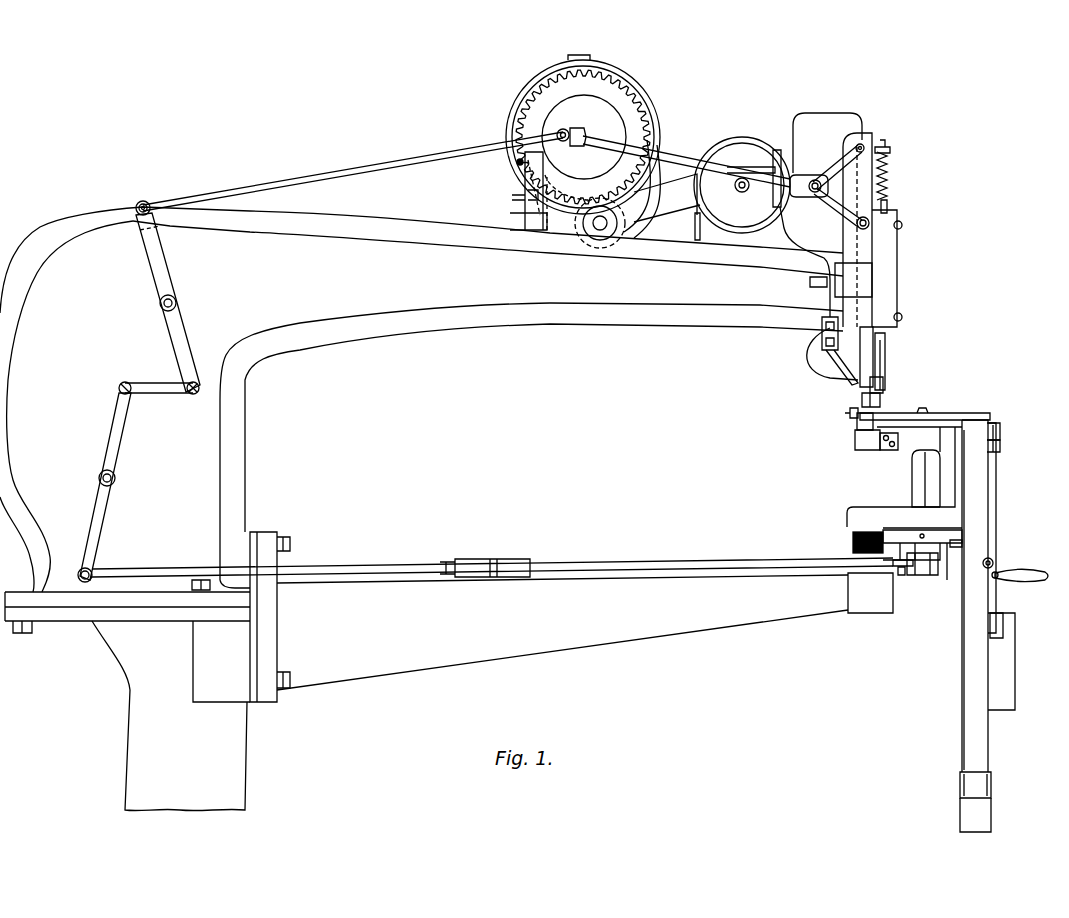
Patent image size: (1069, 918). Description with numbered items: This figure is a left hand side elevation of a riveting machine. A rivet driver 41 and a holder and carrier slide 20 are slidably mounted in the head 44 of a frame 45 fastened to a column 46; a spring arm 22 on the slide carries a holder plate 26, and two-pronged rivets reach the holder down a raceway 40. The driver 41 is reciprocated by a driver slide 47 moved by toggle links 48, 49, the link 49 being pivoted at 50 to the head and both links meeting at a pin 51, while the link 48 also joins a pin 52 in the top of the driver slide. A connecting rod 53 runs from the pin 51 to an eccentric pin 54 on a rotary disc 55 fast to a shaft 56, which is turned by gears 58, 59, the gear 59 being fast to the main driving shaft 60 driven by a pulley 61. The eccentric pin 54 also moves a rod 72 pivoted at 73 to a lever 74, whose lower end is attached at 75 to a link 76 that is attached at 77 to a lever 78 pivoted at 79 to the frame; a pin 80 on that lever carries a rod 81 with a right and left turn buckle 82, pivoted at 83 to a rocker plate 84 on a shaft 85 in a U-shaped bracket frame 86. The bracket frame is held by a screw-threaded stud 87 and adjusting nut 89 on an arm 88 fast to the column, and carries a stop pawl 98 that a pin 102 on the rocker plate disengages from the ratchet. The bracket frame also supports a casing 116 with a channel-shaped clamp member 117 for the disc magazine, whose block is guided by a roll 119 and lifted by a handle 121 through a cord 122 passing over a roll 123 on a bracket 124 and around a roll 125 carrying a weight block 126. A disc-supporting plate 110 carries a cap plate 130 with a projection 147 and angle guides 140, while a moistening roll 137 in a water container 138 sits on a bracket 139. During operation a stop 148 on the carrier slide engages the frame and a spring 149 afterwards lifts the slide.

The holder and carrier slide 20 is at (882, 346).
The spring arm 22 is at (882, 363).
The plate 26 is at (880, 395).
The raceway 40 is at (832, 377).
The rivet driver 41 is at (867, 341).
The head 44 is at (887, 267).
The frame 45 is at (593, 314).
The column 46 is at (240, 752).
The driver slide 47 is at (865, 247).
The toggle link 48 is at (834, 206).
The toggle link 49 is at (833, 163).
The pivot 50 is at (864, 146).
The pin 51 is at (814, 192).
The pin 52 is at (902, 223).
The connecting rod 53 is at (677, 160).
The eccentric pin 54 is at (566, 131).
The rotary disc 55 is at (622, 125).
The shaft 56 is at (583, 146).
The gear 58 is at (622, 104).
The gear 59 is at (628, 230).
The main driving shaft 60 is at (600, 226).
The pulley 61 is at (697, 224).
The rod 72 is at (365, 167).
The pivot 73 is at (150, 203).
The lever 74 is at (187, 327).
The pivot 75 is at (192, 396).
The link 76 is at (153, 386).
The pivot 77 is at (119, 388).
The lever 78 is at (124, 445).
The pivot 79 is at (117, 478).
The pin 80 is at (92, 572).
The rod 81 is at (181, 569).
The right and left turn buckle 82 is at (537, 578).
The pivot 83 is at (902, 576).
The rocker plate 84 is at (924, 576).
The shaft 85 is at (915, 477).
The U-shaped bracket frame 86 is at (950, 482).
The screw-threaded stud 87 is at (863, 528).
The arm 88 is at (880, 600).
The adjusting nut 89 is at (853, 543).
The stop pawl 98 is at (946, 560).
The pin 102 is at (888, 553).
The disc-supporting plate 110 is at (991, 421).
The casing 116 is at (985, 743).
The channel-shaped clamp member 117 is at (991, 780).
The roll 119 is at (993, 562).
The handle 121 is at (1032, 572).
The cord 122 is at (997, 497).
The roll 123 is at (1001, 432).
The bracket 124 is at (1001, 448).
The roll 125 is at (1000, 622).
The block 126 is at (1005, 655).
The cap plate 130 is at (982, 413).
The roll 137 is at (857, 421).
The container 138 is at (855, 440).
The bracket 139 is at (880, 447).
The angle guides 140 is at (923, 409).
The projection 147 is at (850, 413).
The stop 148 is at (890, 204).
The spring 149 is at (893, 165).